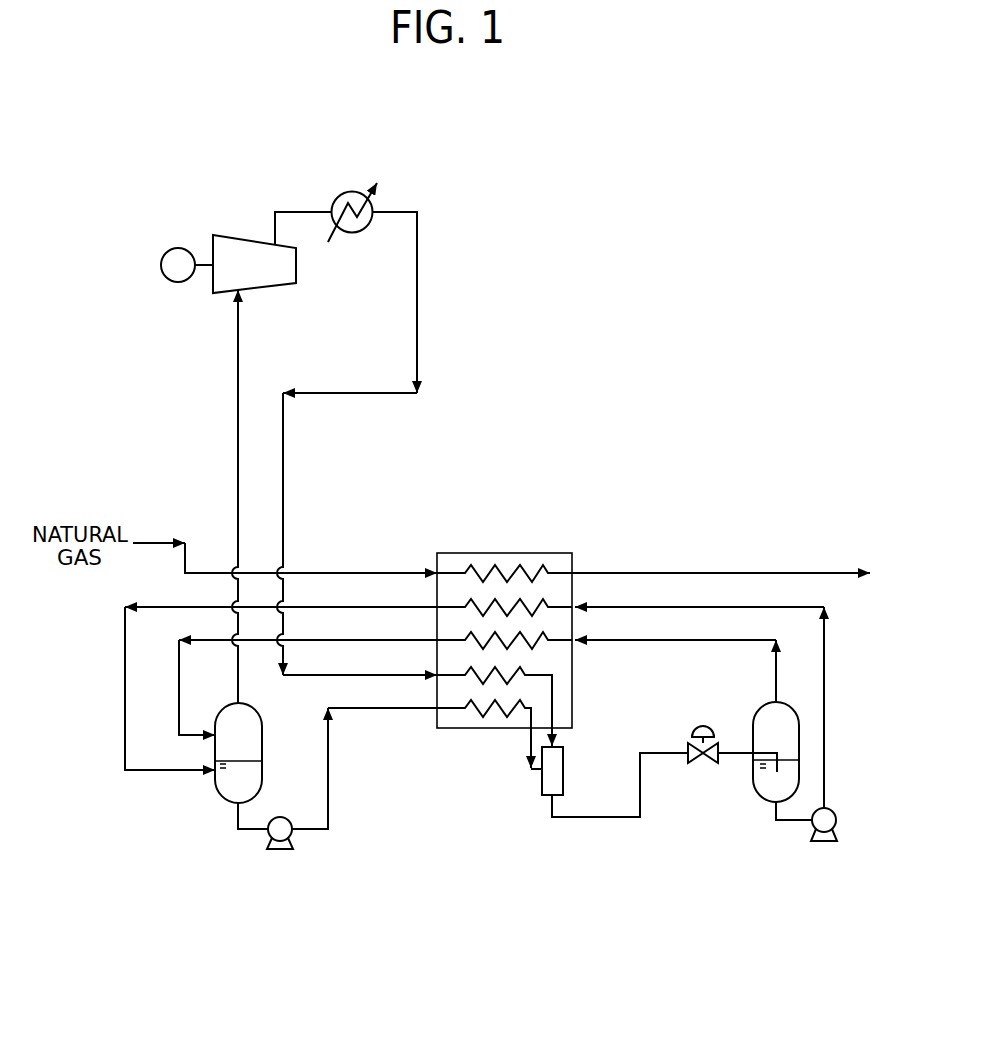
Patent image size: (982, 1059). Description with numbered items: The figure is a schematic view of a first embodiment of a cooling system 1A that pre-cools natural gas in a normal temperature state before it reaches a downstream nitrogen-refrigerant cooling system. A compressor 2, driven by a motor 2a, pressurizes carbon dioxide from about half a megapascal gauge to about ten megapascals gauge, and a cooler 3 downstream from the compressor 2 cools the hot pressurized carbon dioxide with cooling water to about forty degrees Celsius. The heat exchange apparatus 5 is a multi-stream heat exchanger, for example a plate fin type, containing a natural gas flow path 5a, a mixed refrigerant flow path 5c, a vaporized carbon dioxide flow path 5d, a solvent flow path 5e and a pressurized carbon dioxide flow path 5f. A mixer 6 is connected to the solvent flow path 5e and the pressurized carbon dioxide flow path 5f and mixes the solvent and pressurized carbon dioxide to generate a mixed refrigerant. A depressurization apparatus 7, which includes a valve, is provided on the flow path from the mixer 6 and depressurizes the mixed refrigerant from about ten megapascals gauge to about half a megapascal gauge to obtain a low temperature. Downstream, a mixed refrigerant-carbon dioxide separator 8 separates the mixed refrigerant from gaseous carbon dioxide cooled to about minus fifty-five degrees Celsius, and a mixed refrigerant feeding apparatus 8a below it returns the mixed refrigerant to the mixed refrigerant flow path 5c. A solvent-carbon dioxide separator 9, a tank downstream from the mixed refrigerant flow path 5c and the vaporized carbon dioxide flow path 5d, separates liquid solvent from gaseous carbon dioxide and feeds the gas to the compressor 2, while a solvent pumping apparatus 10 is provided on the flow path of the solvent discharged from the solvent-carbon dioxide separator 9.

The cooling system 1A is at (142, 163).
The compressor 2 is at (233, 235).
The motor 2a is at (158, 267).
The cooler 3 is at (378, 203).
The heat exchange apparatus 5 is at (525, 553).
The natural gas flow path 5a is at (477, 570).
The mixed refrigerant flow path 5c is at (498, 598).
The vaporized carbon dioxide flow path 5d is at (475, 642).
The solvent flow path 5e is at (453, 708).
The pressurized carbon dioxide flow path 5f is at (475, 677).
The mixer 6 is at (565, 763).
The depressurization apparatus 7 is at (703, 723).
The mixed refrigerant-carbon dioxide separator 8 is at (805, 750).
The mixed refrigerant feeding apparatus 8a is at (837, 827).
The solvent-carbon dioxide separator 9 is at (210, 782).
The solvent pumping apparatus 10 is at (278, 852).